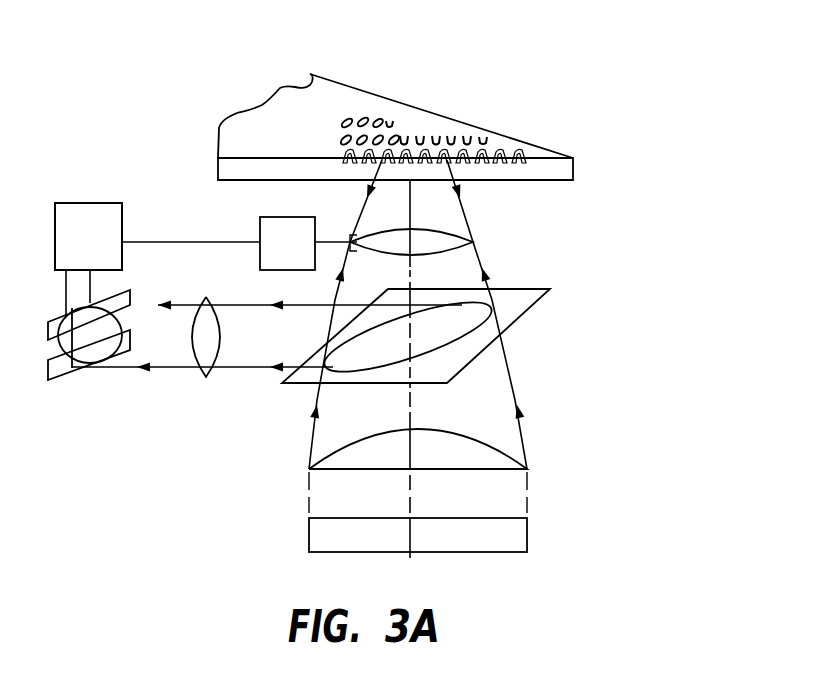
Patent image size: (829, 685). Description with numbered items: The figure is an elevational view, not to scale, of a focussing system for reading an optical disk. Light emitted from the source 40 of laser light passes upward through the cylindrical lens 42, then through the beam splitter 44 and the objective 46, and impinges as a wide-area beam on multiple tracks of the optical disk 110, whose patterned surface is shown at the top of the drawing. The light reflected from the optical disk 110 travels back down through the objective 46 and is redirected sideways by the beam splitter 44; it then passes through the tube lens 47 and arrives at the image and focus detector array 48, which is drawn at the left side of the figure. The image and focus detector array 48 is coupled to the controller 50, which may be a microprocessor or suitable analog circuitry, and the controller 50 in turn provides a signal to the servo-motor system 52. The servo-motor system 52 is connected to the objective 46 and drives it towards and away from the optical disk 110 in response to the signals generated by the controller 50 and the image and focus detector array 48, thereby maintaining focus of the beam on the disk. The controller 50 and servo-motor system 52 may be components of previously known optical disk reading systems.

The optical disk 110 is at (308, 143).
The source of laser light 40 is at (478, 552).
The cylindrical lens 42 is at (482, 440).
The beam splitter 44 is at (502, 330).
The objective 46 is at (475, 238).
The tube lens 47 is at (193, 358).
The image and focus detector array 48 is at (83, 402).
The controller 50 is at (102, 250).
The servo-motor system 52 is at (305, 252).